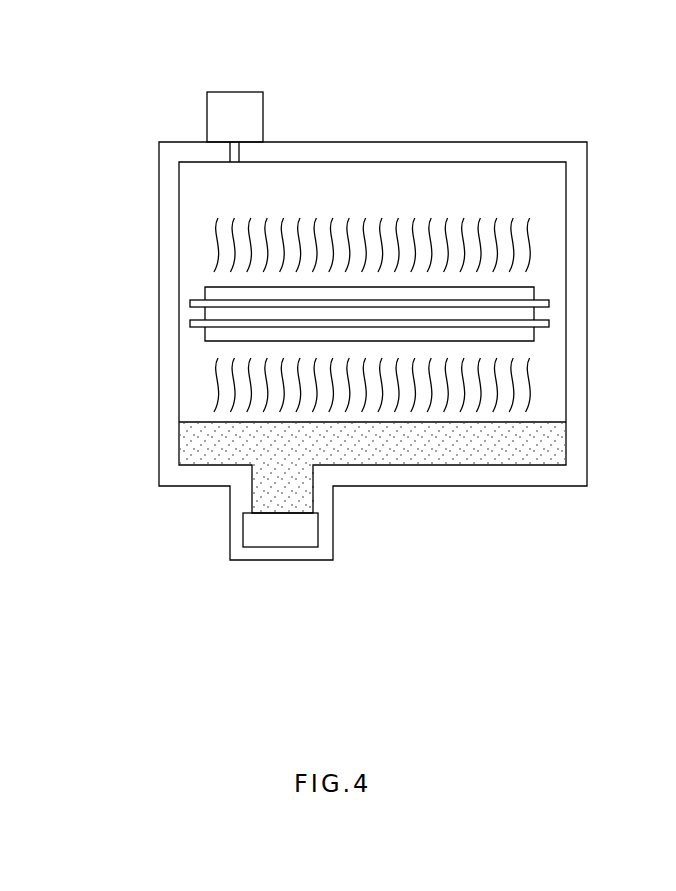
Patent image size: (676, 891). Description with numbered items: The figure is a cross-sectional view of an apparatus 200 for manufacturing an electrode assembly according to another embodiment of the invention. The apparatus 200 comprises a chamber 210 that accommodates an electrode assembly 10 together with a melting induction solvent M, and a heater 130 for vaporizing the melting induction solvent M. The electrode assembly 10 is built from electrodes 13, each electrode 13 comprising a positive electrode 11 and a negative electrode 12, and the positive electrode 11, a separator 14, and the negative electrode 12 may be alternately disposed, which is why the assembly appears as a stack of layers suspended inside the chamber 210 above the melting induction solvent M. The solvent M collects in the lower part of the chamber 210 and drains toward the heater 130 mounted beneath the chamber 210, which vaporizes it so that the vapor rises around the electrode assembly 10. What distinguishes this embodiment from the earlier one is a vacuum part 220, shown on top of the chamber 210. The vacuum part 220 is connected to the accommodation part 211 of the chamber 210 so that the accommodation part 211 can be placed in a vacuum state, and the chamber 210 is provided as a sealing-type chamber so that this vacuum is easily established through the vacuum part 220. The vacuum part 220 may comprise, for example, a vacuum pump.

The apparatus for manufacturing the electrode assembly 200 is at (532, 80).
The chamber 210 is at (305, 130).
The accommodation part 211 is at (413, 178).
The vacuum part 220 is at (229, 80).
The heater 130 is at (285, 548).
The melting induction solvent M is at (447, 460).
The electrode assembly 10 is at (66, 295).
The electrode 13 is at (107, 258).
The positive electrode 11 is at (208, 292).
The negative electrode 12 is at (211, 314).
The separator 14 is at (192, 324).